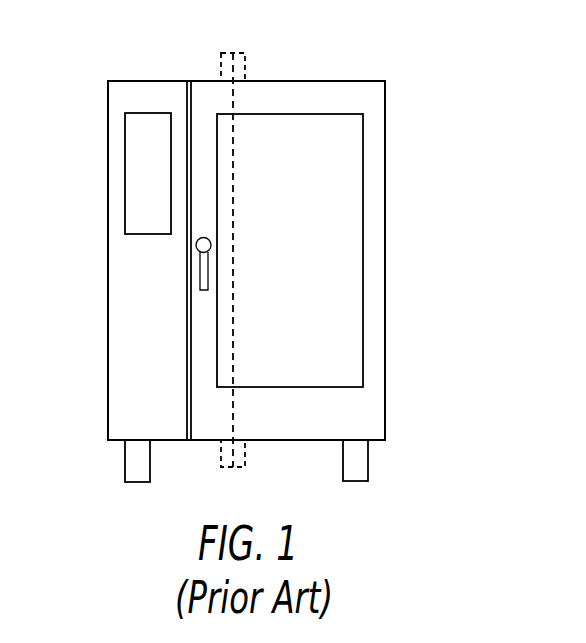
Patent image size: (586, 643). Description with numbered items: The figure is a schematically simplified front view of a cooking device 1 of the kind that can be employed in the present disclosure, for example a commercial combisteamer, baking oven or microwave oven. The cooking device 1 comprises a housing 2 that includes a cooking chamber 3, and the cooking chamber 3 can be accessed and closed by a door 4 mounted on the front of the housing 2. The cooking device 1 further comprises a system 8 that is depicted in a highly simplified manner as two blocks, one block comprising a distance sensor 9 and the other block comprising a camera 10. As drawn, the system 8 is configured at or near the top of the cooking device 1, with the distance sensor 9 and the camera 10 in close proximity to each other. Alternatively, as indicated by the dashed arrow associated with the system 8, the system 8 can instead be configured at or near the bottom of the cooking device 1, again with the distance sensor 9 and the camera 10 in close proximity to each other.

The cooking device 1 is at (274, 265).
The housing 2 is at (413, 62).
The cooking chamber 3 is at (298, 266).
The door 4 is at (207, 260).
The system 8 is at (233, 50).
The distance sensor 9 is at (245, 62).
The camera 10 is at (221, 62).